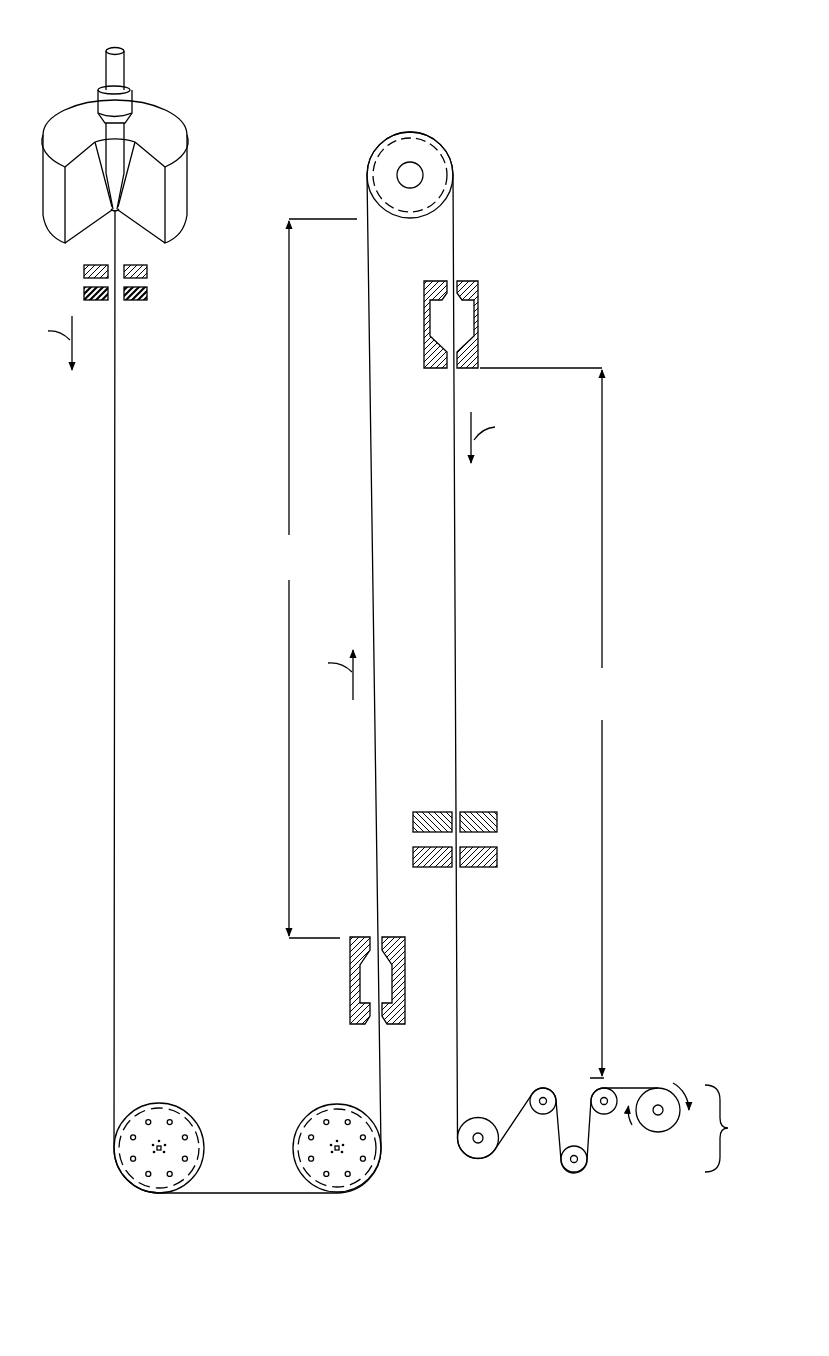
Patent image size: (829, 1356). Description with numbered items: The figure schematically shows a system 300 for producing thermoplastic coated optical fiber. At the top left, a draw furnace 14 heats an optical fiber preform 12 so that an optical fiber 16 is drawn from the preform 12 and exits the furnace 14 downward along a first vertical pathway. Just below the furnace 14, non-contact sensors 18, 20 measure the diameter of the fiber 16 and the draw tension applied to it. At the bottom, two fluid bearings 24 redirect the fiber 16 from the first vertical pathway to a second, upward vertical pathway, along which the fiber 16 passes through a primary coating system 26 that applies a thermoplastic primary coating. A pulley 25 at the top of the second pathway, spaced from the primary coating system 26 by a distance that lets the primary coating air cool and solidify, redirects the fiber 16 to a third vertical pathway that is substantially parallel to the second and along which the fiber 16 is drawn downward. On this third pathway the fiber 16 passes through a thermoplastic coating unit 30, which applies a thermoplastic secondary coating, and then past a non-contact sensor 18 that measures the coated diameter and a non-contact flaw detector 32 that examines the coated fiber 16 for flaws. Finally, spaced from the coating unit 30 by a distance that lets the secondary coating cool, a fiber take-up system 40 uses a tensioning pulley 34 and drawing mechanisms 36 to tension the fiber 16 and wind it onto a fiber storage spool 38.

The system for producing thermoplastic coated optical fiber 300 is at (600, 97).
The optical fiber preform 12 is at (140, 63).
The draw furnace 14 is at (199, 176).
The optical fiber 16 is at (102, 242).
The non-contact sensor 18 is at (149, 270).
The non-contact sensor 20 is at (150, 293).
The fluid bearing 24 is at (172, 1104).
The pulley 25 is at (454, 167).
The primary coating system 26 is at (343, 975).
The thermoplastic coating unit 30 is at (487, 322).
The non-contact flaw detector 32 is at (498, 857).
The tensioning pulley 34 is at (491, 1170).
The drawing mechanism 36 is at (543, 1114).
The fiber storage spool 38 is at (670, 1140).
The fiber take-up system 40 is at (735, 1128).